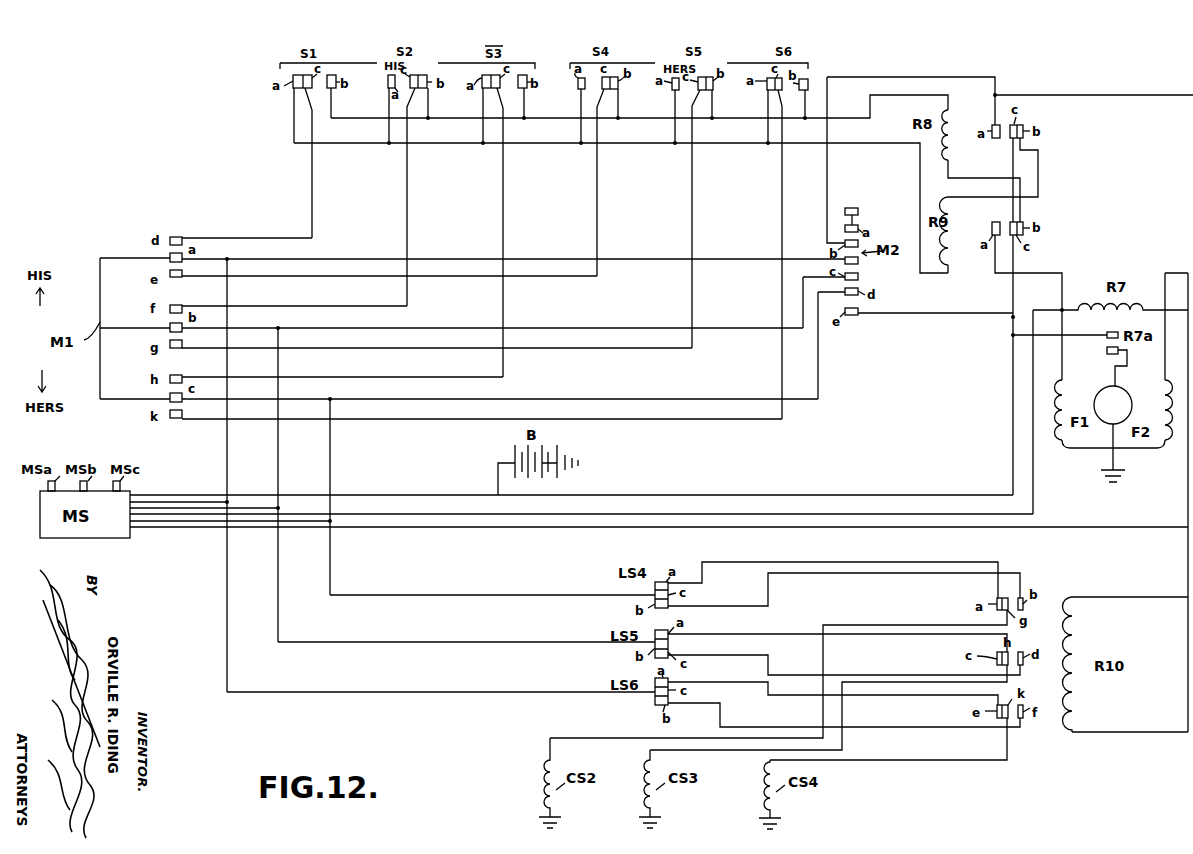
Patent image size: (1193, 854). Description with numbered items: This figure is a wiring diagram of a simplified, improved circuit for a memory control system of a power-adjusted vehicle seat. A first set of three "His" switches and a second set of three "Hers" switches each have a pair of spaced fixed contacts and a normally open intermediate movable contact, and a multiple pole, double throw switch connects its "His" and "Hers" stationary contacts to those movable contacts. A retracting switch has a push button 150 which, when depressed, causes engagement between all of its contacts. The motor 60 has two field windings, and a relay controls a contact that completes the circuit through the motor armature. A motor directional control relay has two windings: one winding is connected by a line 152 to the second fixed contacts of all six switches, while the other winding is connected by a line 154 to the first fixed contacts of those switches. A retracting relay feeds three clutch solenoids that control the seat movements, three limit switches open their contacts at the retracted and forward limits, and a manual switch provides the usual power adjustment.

The motor 60 is at (1127, 397).
The push button 150 is at (846, 181).
The line 152 is at (848, 117).
The line 154 is at (810, 147).